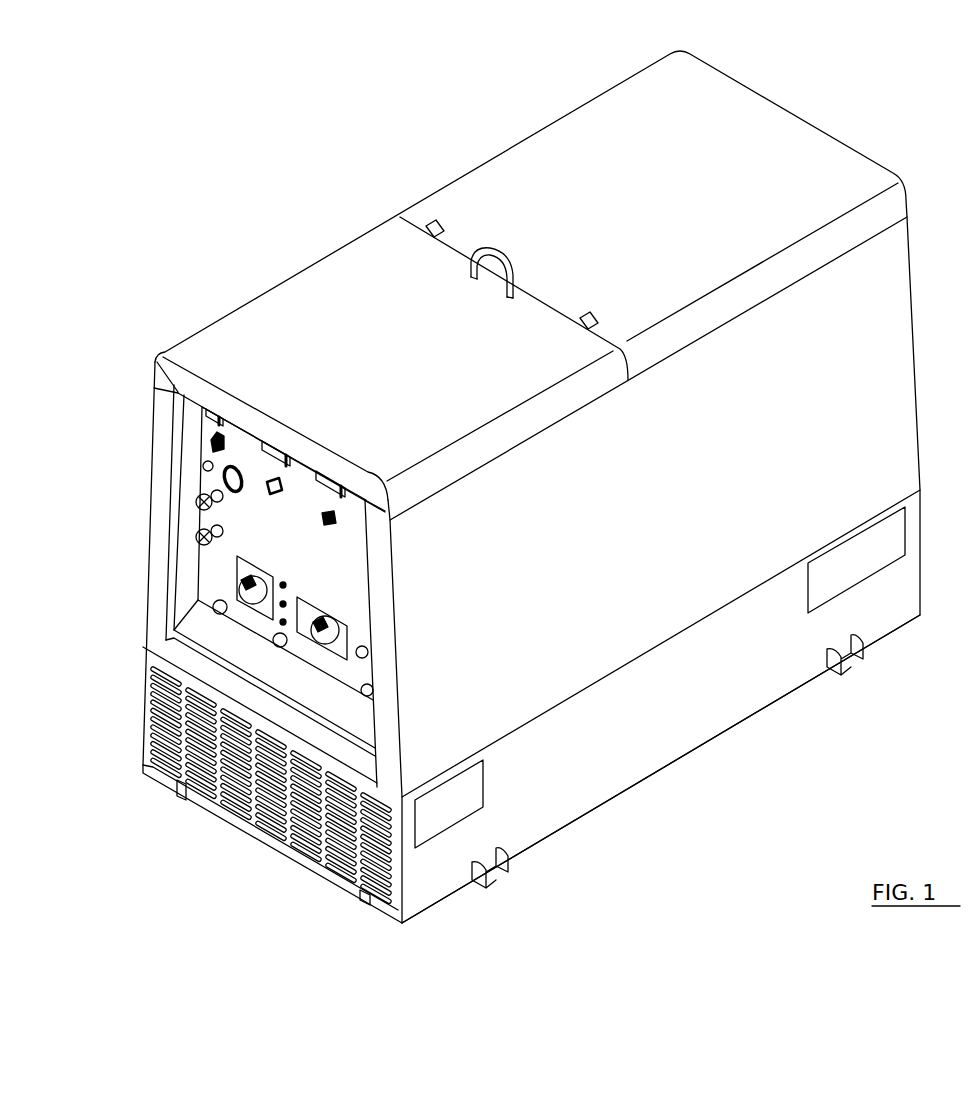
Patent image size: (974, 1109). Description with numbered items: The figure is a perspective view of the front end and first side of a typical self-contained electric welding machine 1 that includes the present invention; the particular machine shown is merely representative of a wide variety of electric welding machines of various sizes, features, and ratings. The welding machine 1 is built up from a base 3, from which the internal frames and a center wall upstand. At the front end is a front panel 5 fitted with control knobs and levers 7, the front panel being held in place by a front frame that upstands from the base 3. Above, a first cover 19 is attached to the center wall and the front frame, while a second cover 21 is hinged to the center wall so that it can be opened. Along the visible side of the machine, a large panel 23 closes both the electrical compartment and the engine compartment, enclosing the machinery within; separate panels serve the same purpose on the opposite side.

The self-contained electric welding machine 1 is at (140, 543).
The base 3 is at (661, 784).
The front panel 5 is at (337, 582).
The control knobs and levers 7 is at (251, 568).
The first cover 19 is at (437, 380).
The second cover 21 is at (682, 236).
The large panel 23 is at (586, 582).